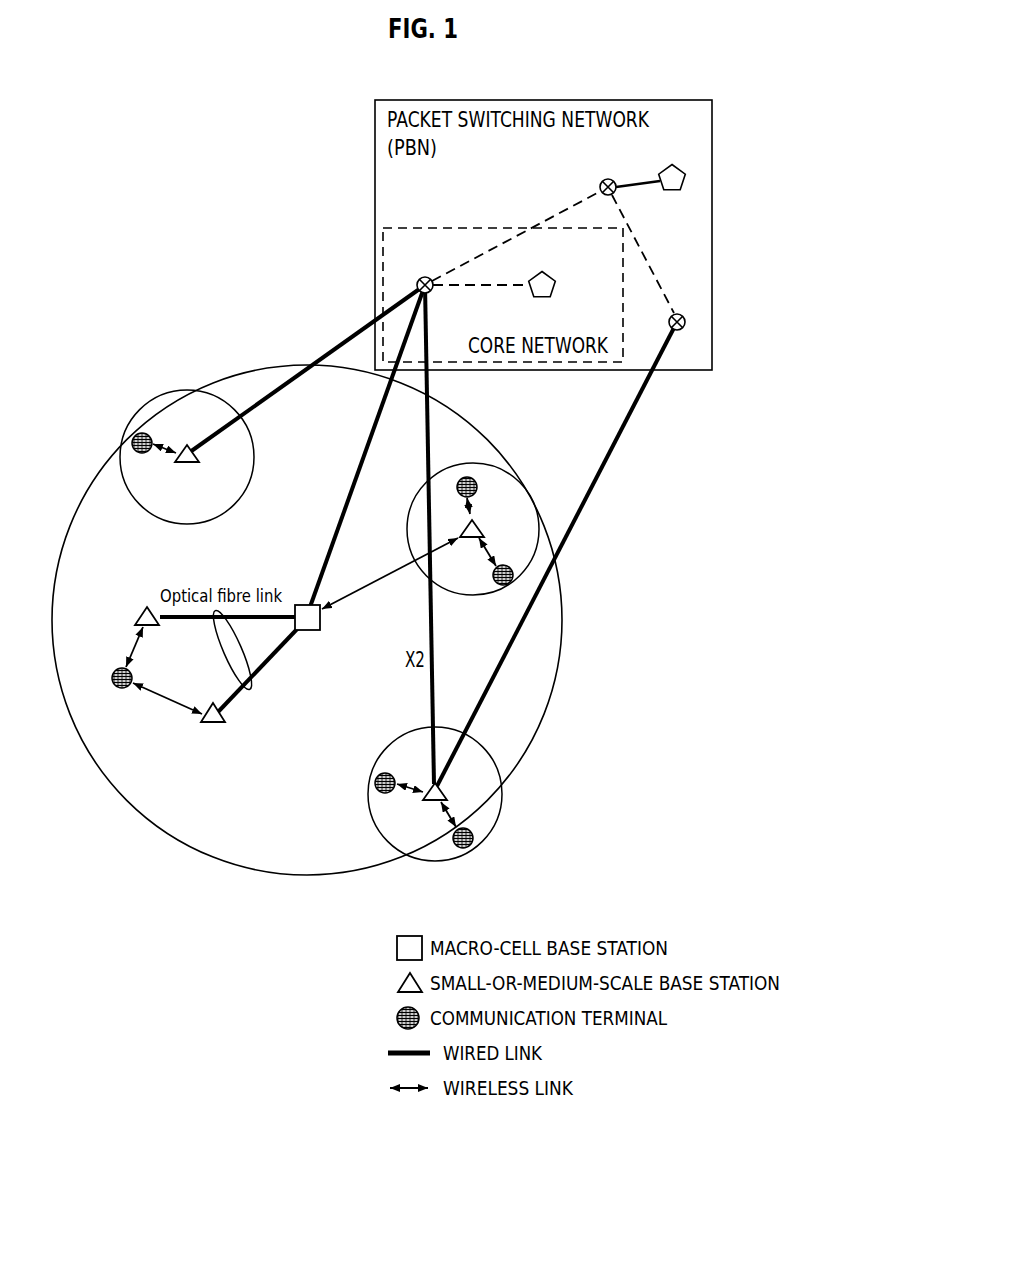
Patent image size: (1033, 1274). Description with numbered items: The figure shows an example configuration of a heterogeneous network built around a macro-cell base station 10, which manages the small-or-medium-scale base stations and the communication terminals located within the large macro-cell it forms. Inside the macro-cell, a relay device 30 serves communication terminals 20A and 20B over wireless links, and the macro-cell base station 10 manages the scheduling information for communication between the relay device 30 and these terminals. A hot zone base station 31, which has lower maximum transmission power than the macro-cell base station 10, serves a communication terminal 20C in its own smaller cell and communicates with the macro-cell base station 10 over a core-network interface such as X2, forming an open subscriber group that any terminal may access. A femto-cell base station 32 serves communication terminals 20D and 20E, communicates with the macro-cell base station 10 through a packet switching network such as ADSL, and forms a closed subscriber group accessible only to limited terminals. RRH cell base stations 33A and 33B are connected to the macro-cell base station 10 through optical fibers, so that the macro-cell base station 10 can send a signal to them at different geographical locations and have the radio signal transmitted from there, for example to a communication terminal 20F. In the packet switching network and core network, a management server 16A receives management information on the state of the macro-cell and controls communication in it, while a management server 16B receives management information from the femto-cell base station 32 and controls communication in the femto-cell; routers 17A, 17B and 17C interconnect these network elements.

The macro-cell base station 10 is at (322, 622).
The management server 16A is at (550, 273).
The management server 16B is at (670, 191).
The router 17A is at (427, 277).
The router 17B is at (609, 178).
The router 17C is at (681, 313).
The communication terminal 20A is at (465, 476).
The communication terminal 20B is at (503, 586).
The communication terminal 20C is at (152, 441).
The communication terminal 20D is at (373, 783).
The communication terminal 20E is at (475, 838).
The communication terminal 20F is at (121, 690).
The relay device 30 is at (483, 528).
The hot zone base station 31 is at (187, 464).
The femto-cell base station 32 is at (442, 790).
The RRH cell base station 33A is at (135, 616).
The RRH cell base station 33B is at (213, 724).